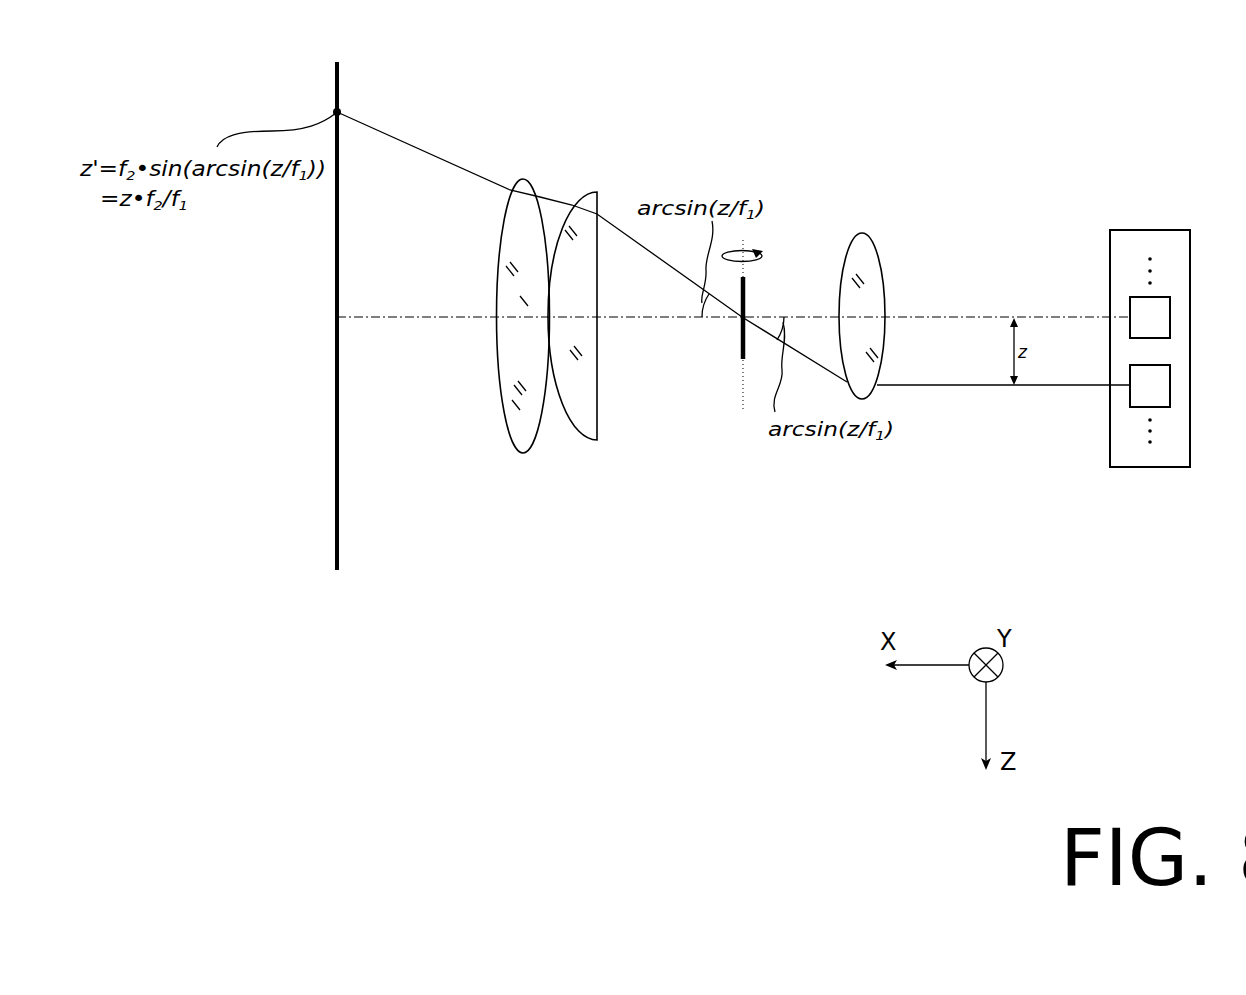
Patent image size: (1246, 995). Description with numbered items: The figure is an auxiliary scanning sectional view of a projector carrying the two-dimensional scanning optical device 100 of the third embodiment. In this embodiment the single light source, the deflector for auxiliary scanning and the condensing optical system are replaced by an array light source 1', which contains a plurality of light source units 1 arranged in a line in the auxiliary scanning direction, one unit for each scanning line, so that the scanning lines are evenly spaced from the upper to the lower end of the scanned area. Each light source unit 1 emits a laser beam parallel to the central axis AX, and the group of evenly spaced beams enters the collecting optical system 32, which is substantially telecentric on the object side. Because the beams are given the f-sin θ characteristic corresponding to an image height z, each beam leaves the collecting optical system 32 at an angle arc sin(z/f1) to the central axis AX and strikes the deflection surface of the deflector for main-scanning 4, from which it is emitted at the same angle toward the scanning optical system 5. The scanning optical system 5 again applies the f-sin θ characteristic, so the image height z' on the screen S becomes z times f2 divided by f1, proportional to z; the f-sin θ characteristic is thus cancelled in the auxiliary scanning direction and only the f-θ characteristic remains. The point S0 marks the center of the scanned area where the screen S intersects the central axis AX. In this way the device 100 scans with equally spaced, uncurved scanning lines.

The light source unit 1 is at (1180, 352).
The array light source 1' is at (1175, 347).
The deflector for main-scanning 4 is at (742, 345).
The scanning optical system 5 is at (597, 170).
The collecting optical system 32 is at (868, 260).
The two-dimensional scanning optical device 100 is at (688, 582).
The screen S is at (336, 505).
The center of scanned area S0 is at (313, 319).
The central axis AX is at (425, 317).